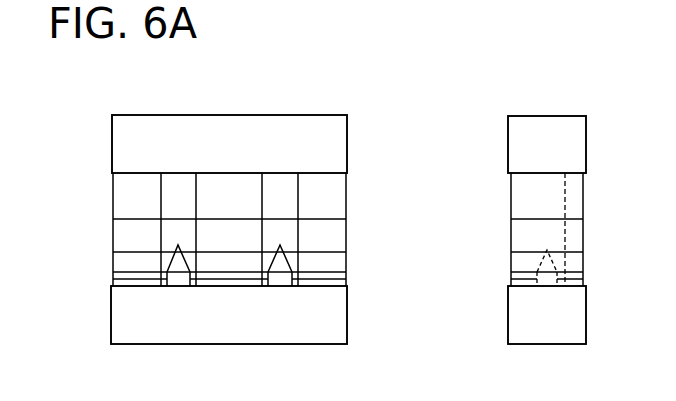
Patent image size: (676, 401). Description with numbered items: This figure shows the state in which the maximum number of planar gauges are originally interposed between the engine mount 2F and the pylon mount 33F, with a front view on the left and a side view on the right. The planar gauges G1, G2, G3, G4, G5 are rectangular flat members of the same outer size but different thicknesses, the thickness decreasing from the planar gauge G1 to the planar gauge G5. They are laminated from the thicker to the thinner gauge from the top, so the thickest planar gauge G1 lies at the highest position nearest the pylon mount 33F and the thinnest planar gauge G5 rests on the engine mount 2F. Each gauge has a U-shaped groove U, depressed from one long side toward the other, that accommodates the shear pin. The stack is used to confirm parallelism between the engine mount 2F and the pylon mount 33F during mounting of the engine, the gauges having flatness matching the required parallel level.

The pylon mount 33F is at (228, 115).
The planar gauge G1 is at (347, 191).
The planar gauge G2 is at (111, 236).
The planar gauge G3 is at (347, 258).
The planar gauge G4 is at (111, 277).
The planar gauge G5 is at (347, 283).
The U-shaped groove U is at (161, 205).
The engine mount 2F is at (233, 344).